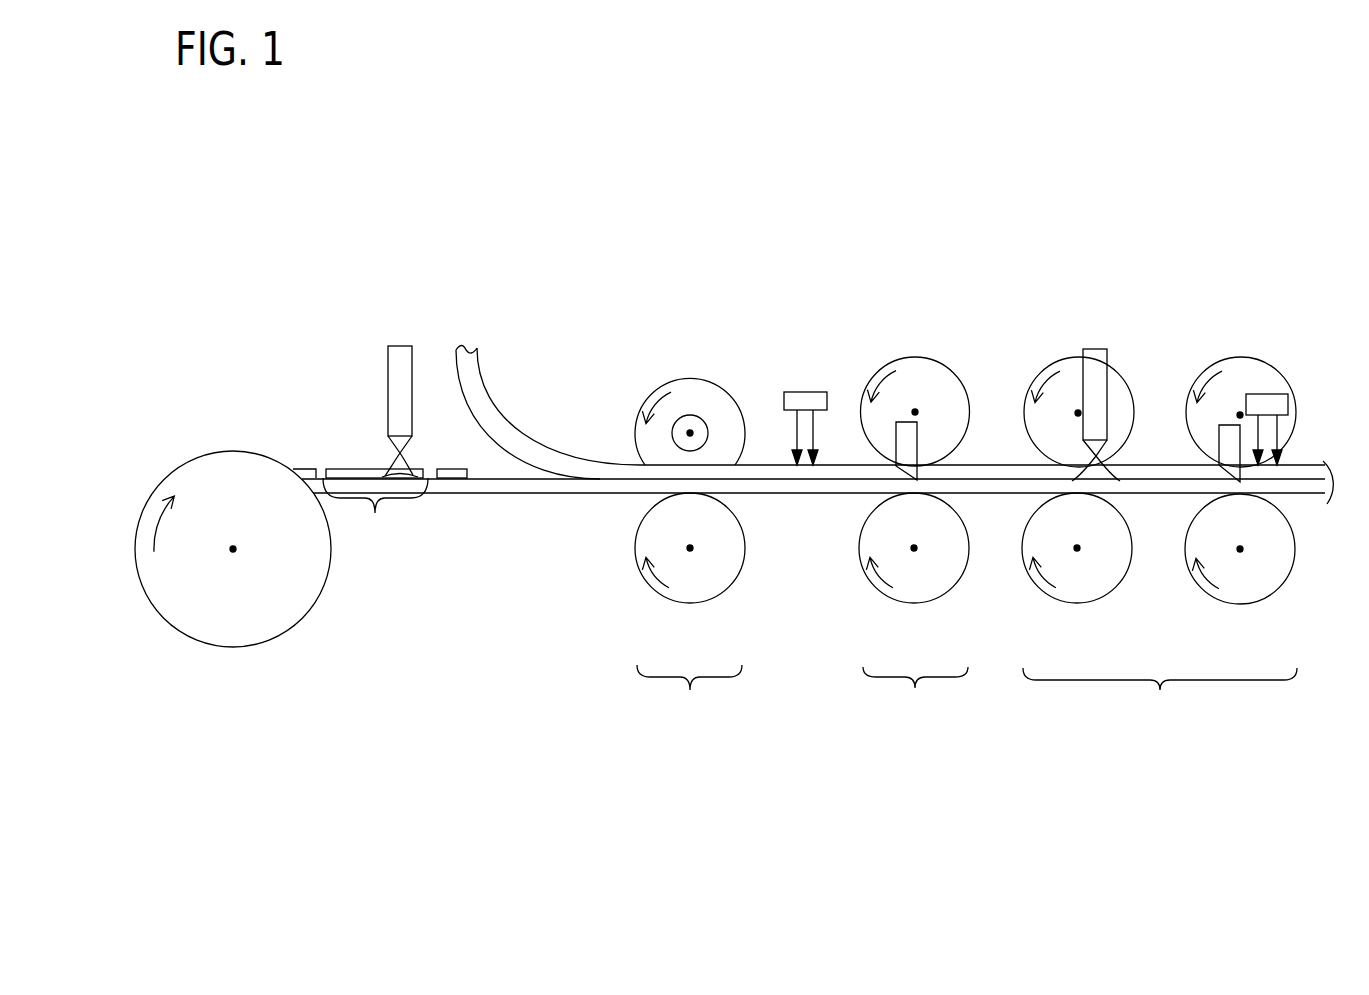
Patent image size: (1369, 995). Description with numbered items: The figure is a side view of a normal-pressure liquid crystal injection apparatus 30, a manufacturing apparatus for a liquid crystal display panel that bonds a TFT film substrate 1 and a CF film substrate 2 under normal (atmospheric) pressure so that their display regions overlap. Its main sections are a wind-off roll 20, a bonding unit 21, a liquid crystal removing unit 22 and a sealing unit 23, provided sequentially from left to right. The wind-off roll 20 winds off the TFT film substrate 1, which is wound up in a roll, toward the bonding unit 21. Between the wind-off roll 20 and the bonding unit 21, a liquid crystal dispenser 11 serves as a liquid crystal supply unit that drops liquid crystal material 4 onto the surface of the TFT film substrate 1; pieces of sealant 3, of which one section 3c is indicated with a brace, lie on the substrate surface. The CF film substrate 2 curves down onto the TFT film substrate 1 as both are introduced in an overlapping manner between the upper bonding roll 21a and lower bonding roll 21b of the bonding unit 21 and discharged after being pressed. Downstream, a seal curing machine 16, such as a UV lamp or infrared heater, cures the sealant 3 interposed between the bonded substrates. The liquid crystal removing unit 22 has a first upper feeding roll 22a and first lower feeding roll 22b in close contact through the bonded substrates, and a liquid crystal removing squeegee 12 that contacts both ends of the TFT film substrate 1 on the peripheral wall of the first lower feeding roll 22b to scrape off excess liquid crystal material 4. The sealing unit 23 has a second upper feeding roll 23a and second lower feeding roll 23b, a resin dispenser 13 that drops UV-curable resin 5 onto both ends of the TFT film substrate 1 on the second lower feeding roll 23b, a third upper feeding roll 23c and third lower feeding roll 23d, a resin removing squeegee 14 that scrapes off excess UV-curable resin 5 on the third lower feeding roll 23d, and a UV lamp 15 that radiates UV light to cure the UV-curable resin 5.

The TFT film substrate 1 is at (479, 488).
The CF film substrate 2 is at (500, 426).
The sealant 3 is at (455, 468).
The electrode element piece 3c is at (375, 513).
The liquid crystal material 4 is at (392, 465).
The UV-curable resin 5 is at (1097, 473).
The liquid crystal dispenser 11 is at (392, 390).
The liquid crystal removing squeegee 12 is at (907, 440).
The resin dispenser 13 is at (1102, 358).
The resin removing squeegee 14 is at (1225, 438).
The UV lamp 15 is at (1280, 407).
The seal curing machine 16 is at (803, 392).
The wind-off roll 20 is at (251, 631).
The bonding unit 21 is at (690, 522).
The upper bonding roll 21a is at (697, 382).
The lower bonding roll 21b is at (690, 592).
The liquid crystal removing unit 22 is at (914, 513).
The first upper feeding roll 22a is at (920, 372).
The first lower feeding roll 22b is at (912, 592).
The sealing unit 23 is at (1159, 514).
The second upper feeding roll 23a is at (1068, 373).
The second lower feeding roll 23b is at (1060, 592).
The third upper feeding roll 23c is at (1242, 373).
The third lower feeding roll 23d is at (1238, 592).
The normal-pressure liquid crystal injection apparatus 30 is at (374, 213).